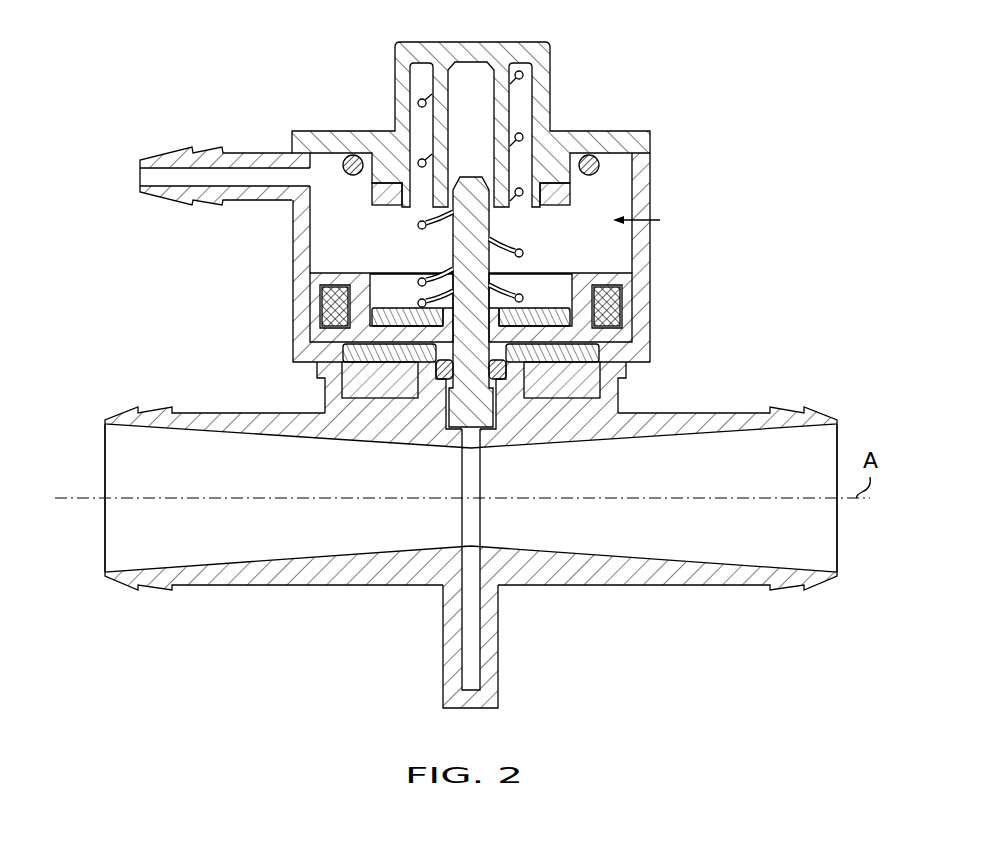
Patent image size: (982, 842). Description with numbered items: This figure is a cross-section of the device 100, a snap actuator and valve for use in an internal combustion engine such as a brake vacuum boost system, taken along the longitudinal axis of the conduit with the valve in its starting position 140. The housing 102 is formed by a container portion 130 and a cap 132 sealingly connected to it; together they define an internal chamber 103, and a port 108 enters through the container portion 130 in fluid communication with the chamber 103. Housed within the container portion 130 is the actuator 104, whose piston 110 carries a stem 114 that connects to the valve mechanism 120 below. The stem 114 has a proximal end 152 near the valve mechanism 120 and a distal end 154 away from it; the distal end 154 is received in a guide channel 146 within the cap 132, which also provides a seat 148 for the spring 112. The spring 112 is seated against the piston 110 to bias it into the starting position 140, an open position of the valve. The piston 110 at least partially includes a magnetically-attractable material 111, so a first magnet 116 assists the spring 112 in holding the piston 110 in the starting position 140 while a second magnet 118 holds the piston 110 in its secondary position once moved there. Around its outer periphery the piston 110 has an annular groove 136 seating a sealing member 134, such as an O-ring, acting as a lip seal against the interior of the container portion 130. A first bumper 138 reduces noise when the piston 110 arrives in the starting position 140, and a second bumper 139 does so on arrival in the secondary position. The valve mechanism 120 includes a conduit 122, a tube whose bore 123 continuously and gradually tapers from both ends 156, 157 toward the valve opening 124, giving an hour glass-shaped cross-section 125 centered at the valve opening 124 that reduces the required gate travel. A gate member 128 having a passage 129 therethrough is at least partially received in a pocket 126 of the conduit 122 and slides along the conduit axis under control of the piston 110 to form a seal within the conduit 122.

The device 100 is at (656, 78).
The housing 102 is at (650, 152).
The chamber 103 is at (322, 216).
The actuator 104 is at (660, 220).
The port 108 is at (143, 180).
The piston 110 is at (623, 280).
The magnetically-attractable material 111 is at (390, 307).
The spring 112 is at (518, 73).
The stem 114 is at (457, 237).
The first magnet 116 is at (400, 393).
The second magnet 118 is at (390, 200).
The valve mechanism 120 is at (412, 605).
The conduit 122 is at (640, 580).
The bore 123 is at (808, 440).
The valve opening 124 is at (357, 552).
The hour glass-shaped cross-section 125 is at (611, 544).
The pocket 126 is at (465, 655).
The gate member 128 is at (473, 630).
The passage 129 is at (478, 546).
The container portion 130 is at (300, 275).
The cap 132 is at (300, 137).
The sealing member 134 is at (628, 325).
The annular groove 136 is at (322, 307).
The first bumper 138 is at (507, 378).
The second bumper 139 is at (360, 153).
The starting position 140 is at (616, 357).
The guide channel 146 is at (475, 70).
The seat 148 is at (415, 77).
The proximal end 152 is at (475, 428).
The distal end 154 is at (463, 190).
The first end 156 is at (106, 478).
The second end 157 is at (843, 560).